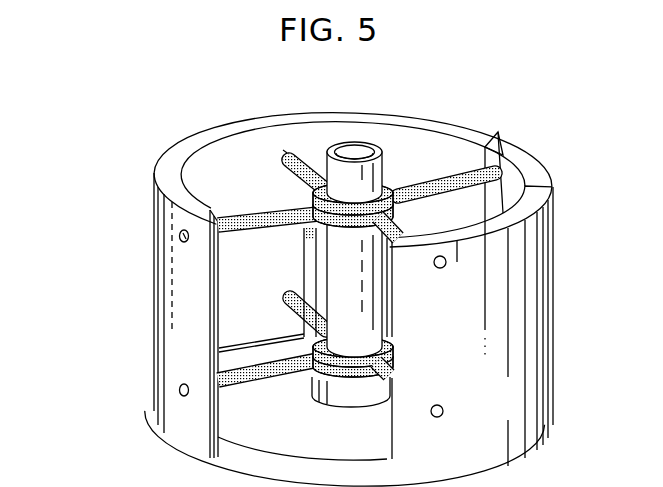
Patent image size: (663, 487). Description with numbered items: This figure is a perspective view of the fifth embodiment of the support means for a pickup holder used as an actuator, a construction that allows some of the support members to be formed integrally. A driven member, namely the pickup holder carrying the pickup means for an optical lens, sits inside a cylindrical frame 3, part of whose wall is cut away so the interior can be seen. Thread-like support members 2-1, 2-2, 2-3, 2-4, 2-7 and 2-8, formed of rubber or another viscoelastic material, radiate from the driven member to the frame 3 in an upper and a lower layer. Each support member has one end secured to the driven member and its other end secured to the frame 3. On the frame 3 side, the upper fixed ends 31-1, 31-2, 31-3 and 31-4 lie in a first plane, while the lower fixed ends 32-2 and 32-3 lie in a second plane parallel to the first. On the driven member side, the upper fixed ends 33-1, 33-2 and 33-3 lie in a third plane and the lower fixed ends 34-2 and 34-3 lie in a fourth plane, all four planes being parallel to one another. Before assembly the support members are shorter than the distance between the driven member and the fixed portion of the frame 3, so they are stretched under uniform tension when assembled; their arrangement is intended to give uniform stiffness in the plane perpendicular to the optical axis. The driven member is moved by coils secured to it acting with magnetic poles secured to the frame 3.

The support member 2-1 is at (457, 179).
The support member 2-2 is at (378, 242).
The support member 2-3 is at (252, 232).
The support member 2-4 is at (288, 177).
The support member 2-7 is at (253, 378).
The support member 2-8 is at (287, 312).
The frame 3 is at (533, 158).
The upper fixed end 31-1 is at (498, 131).
The upper fixed end 31-2 is at (447, 268).
The upper fixed end 31-3 is at (178, 234).
The upper fixed end 31-4 is at (286, 152).
The lower fixed end 32-2 is at (443, 407).
The lower fixed end 32-3 is at (179, 389).
The upper fixed end 33-1 is at (390, 188).
The upper fixed end 33-2 is at (397, 207).
The upper fixed end 33-3 is at (318, 217).
The lower fixed end 34-2 is at (377, 378).
The lower fixed end 34-3 is at (307, 369).